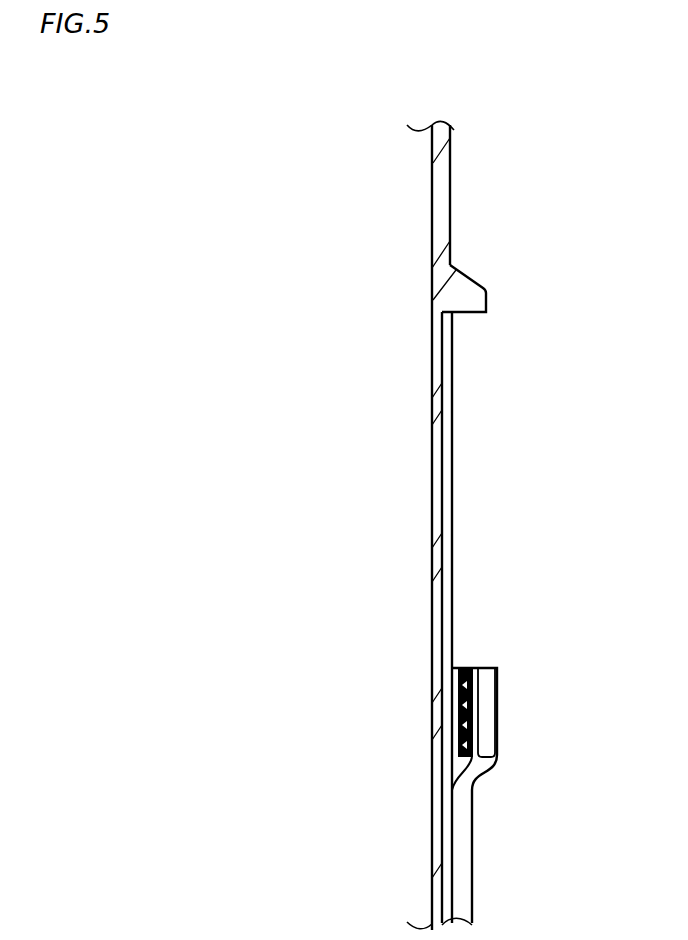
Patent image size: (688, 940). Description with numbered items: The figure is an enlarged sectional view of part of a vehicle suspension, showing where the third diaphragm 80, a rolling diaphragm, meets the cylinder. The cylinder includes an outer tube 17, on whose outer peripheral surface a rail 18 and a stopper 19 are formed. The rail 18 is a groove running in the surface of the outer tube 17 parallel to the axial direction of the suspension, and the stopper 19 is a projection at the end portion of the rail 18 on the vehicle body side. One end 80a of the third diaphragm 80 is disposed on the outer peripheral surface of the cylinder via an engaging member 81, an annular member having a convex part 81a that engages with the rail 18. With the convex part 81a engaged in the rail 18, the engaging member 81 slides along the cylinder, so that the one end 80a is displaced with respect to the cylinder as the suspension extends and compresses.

The outer tube 17 is at (450, 208).
The stopper 19 is at (486, 300).
The rail 18 is at (447, 424).
The third diaphragm 80 is at (472, 873).
The engaging member 81 is at (524, 712).
The one end of the third diaphragm 80a is at (490, 721).
The convex part 81a is at (446, 707).